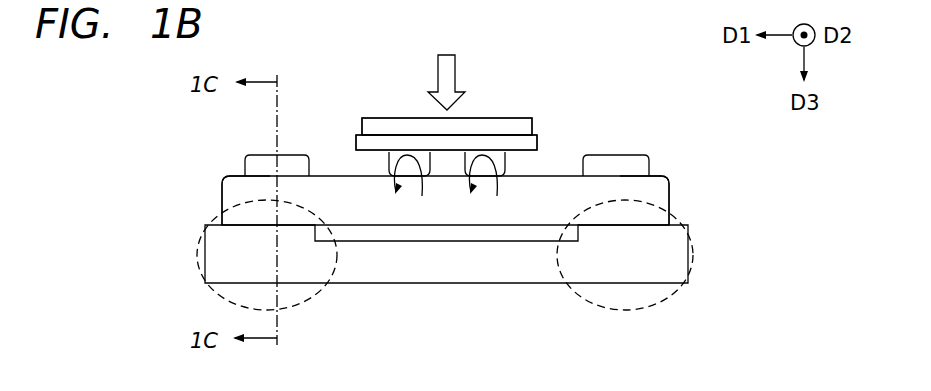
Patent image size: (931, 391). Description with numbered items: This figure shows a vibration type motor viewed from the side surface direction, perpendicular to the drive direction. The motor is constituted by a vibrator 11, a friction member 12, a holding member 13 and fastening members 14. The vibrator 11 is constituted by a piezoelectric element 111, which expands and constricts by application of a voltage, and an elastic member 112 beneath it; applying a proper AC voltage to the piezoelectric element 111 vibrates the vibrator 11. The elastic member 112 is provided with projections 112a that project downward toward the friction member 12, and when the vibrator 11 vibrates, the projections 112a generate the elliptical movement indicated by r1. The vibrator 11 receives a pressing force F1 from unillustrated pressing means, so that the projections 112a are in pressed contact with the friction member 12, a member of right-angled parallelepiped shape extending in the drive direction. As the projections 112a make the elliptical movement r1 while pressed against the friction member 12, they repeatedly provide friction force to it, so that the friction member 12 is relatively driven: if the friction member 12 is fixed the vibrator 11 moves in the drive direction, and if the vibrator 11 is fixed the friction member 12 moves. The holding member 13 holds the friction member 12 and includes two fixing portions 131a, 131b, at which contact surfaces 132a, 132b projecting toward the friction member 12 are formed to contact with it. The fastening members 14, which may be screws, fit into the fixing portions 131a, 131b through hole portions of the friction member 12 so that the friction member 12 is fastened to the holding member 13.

The vibrator 11 is at (372, 95).
The piezoelectric element 111 is at (413, 125).
The elastic member 112 is at (515, 138).
The projections 112a is at (422, 150).
The friction member 12 is at (652, 192).
The holding member 13 is at (495, 279).
The fixing portion 131a is at (230, 304).
The fixing portion 131b is at (660, 302).
The contact surface 132a is at (267, 224).
The contact surface 132b is at (637, 225).
The fastening members 14 is at (260, 155).
The pressing force F1 is at (446, 69).
The elliptical movement r1 is at (480, 202).